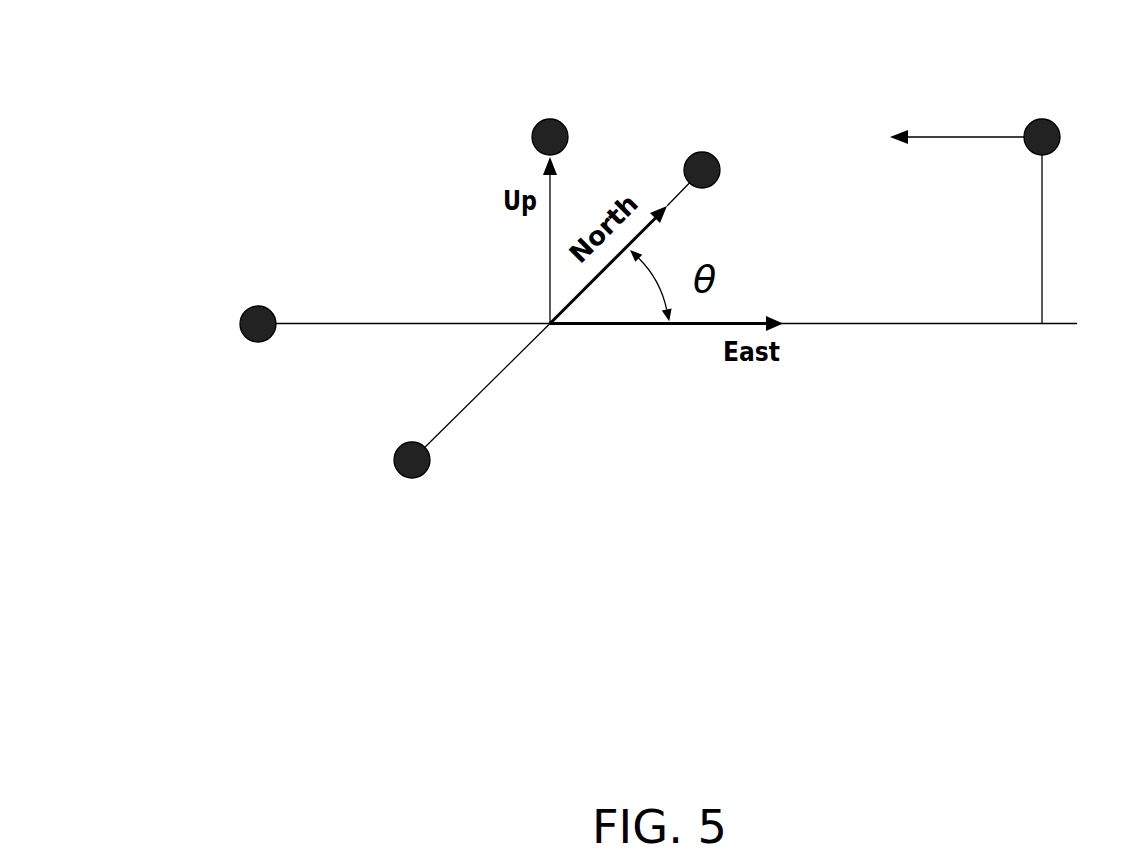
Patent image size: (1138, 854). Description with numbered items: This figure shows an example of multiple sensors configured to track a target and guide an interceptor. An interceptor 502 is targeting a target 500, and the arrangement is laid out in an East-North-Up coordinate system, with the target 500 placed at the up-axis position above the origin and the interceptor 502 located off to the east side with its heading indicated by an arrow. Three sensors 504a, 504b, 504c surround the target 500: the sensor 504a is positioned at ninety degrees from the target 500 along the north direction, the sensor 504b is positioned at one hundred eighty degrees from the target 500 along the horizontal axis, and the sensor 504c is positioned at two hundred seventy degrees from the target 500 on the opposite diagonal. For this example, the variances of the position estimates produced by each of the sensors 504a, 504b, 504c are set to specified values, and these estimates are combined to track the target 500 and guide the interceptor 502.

The target 500 is at (492, 93).
The interceptor 502 is at (975, 179).
The sensor 504a is at (731, 129).
The sensor 504b is at (197, 292).
The sensor 504c is at (381, 485).